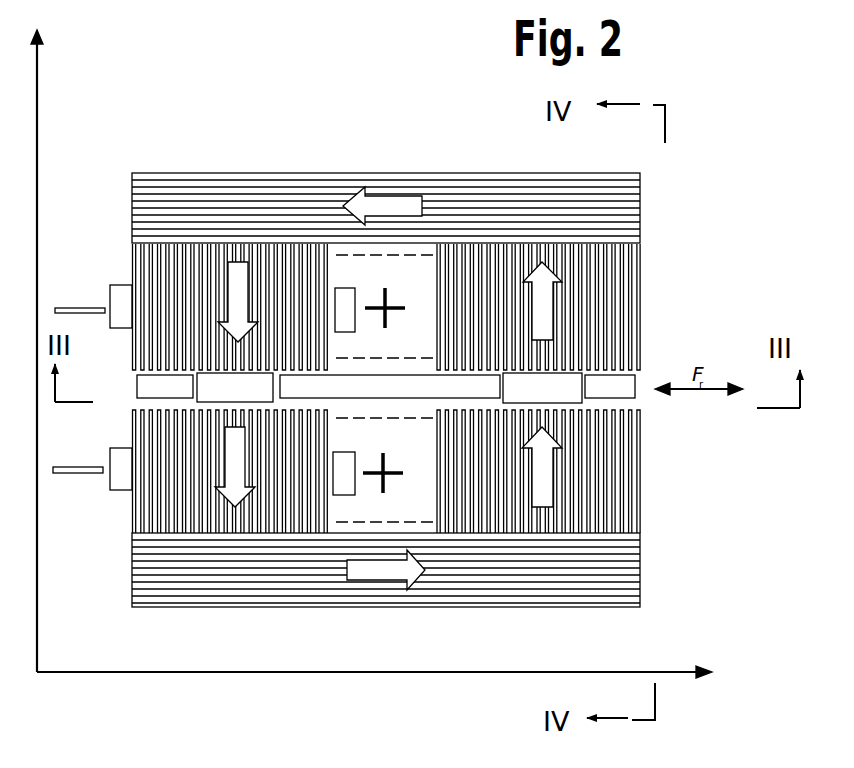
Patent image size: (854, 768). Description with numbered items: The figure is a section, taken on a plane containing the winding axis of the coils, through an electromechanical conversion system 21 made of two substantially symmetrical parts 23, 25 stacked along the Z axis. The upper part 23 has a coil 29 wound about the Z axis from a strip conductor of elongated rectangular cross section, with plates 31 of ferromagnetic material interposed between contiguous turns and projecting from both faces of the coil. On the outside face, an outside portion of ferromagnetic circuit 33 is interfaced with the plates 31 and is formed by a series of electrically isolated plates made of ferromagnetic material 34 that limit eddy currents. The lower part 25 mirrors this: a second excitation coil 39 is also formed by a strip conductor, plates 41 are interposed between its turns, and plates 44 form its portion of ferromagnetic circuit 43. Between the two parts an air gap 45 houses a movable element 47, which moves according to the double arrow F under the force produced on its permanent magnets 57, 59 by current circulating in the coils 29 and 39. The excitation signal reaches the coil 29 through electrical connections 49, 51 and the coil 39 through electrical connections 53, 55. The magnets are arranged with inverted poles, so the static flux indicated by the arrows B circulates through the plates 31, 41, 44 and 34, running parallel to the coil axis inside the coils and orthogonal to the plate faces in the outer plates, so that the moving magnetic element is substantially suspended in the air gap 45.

The electromechanical conversion system 21 is at (168, 682).
The part 23 is at (679, 199).
The part 25 is at (677, 611).
The coil 29 is at (136, 368).
The plates 31 is at (136, 259).
The outside portion of ferromagnetic circuit 33 is at (456, 185).
The plates made of ferromagnetic material 34 is at (137, 200).
The second excitation coil 39 is at (137, 418).
The plates 41 is at (150, 511).
The portion of ferromagnetic circuit 43 is at (358, 599).
The plates 44 is at (637, 583).
The air gap 45 is at (380, 369).
The movable element 47 is at (397, 399).
The electrical connection 49 is at (118, 297).
The electrical connection 51 is at (345, 296).
The electrical connection 53 is at (118, 460).
The electrical connection 55 is at (348, 489).
The permanent magnet 57 is at (248, 399).
The permanent magnet 59 is at (556, 399).